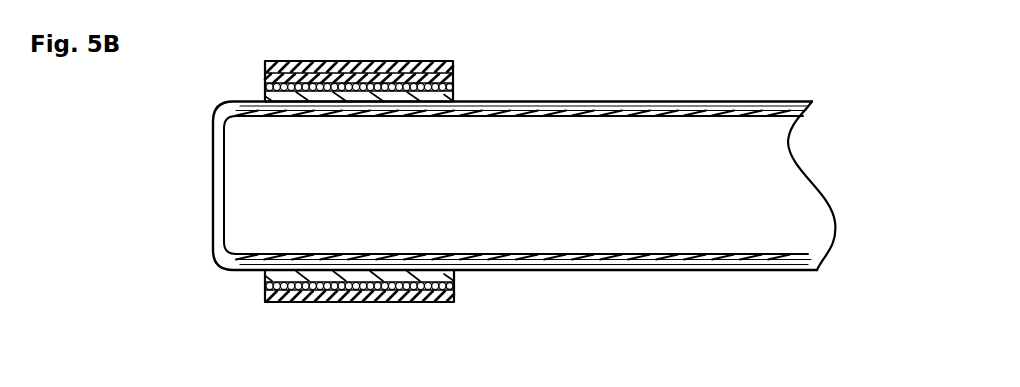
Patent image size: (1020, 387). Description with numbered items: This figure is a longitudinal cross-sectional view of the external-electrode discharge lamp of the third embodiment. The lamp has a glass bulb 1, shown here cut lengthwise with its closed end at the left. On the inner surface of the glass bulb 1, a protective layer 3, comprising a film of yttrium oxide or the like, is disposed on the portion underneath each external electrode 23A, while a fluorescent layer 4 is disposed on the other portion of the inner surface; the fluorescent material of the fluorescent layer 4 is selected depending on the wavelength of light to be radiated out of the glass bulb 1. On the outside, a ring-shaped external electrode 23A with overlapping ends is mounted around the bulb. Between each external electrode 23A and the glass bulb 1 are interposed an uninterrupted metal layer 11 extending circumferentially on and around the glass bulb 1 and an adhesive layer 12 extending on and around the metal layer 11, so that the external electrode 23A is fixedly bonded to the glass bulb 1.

The glass bulb 1 is at (760, 262).
The protective layer 3 is at (362, 256).
The fluorescent layer 4 is at (674, 253).
The metal layer 11 is at (453, 88).
The adhesive layer 12 is at (411, 65).
The external electrode 23A is at (278, 61).